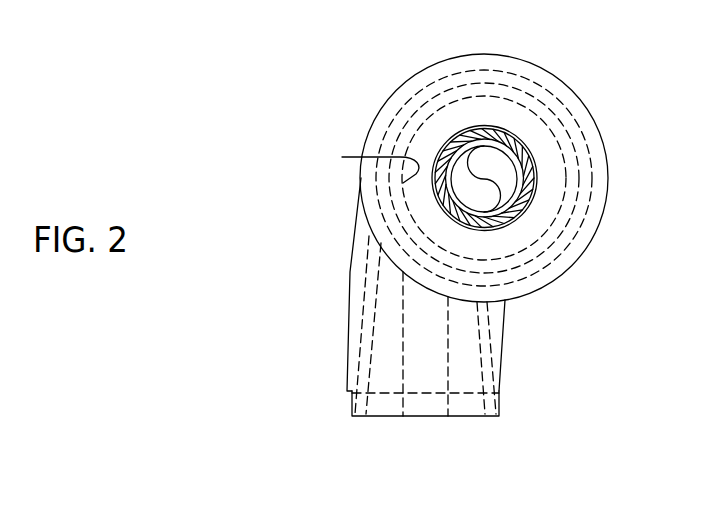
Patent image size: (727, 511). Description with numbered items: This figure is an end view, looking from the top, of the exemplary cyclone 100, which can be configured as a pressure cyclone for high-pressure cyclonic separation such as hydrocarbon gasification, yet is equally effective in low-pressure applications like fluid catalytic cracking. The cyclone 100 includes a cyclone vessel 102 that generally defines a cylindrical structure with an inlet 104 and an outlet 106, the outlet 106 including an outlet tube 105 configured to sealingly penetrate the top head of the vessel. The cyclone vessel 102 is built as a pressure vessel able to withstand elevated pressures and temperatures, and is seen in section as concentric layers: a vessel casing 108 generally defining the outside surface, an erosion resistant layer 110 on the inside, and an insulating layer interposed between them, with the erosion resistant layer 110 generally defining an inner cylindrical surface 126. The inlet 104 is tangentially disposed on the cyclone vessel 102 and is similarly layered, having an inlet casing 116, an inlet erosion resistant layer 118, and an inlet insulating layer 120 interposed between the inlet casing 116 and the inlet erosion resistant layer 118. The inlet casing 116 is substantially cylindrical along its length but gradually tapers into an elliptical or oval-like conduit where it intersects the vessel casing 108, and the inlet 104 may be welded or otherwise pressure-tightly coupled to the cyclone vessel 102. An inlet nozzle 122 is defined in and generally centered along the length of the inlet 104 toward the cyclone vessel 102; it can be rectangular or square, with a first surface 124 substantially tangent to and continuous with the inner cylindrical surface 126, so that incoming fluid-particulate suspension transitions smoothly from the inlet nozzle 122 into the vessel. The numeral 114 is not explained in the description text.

The cyclone 100 is at (322, 103).
The cyclone vessel 102 is at (598, 112).
The inlet 104 is at (505, 327).
The outlet tube 105 is at (496, 134).
The outlet 106 is at (503, 168).
The vessel casing 108 is at (600, 140).
The erosion resistant layer 110 is at (573, 193).
The intermediate wall 114 is at (590, 167).
The inlet casing 116 is at (358, 302).
The inlet erosion resistant layer 118 is at (383, 363).
The inlet insulating layer 120 is at (363, 333).
The inlet nozzle 122 is at (443, 357).
The first surface 124 is at (403, 377).
The inner cylindrical surface 126 is at (358, 165).